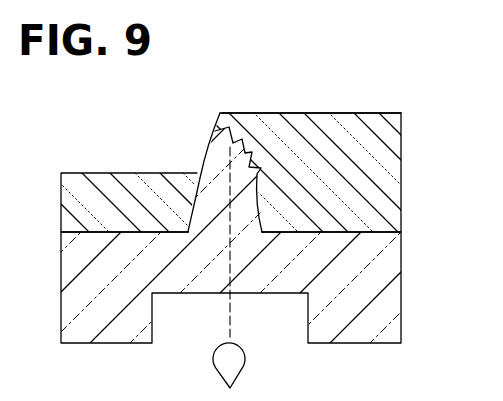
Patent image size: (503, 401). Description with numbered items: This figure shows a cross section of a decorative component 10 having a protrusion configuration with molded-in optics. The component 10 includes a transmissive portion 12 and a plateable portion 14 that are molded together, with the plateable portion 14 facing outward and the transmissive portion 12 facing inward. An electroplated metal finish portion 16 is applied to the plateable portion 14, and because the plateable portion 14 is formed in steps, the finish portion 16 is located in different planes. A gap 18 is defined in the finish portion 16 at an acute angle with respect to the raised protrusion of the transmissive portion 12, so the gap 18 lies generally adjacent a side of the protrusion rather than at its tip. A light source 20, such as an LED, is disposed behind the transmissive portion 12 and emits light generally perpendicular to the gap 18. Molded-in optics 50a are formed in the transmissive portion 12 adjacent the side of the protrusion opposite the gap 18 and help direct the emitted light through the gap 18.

The decorative component 10 is at (286, 86).
The transmissive portion 12 is at (373, 268).
The plateable portion 14 is at (368, 168).
The finish portion 16 is at (120, 172).
The gap 18 is at (205, 152).
The light source 20 is at (233, 366).
The molded-in optics 50a is at (240, 137).